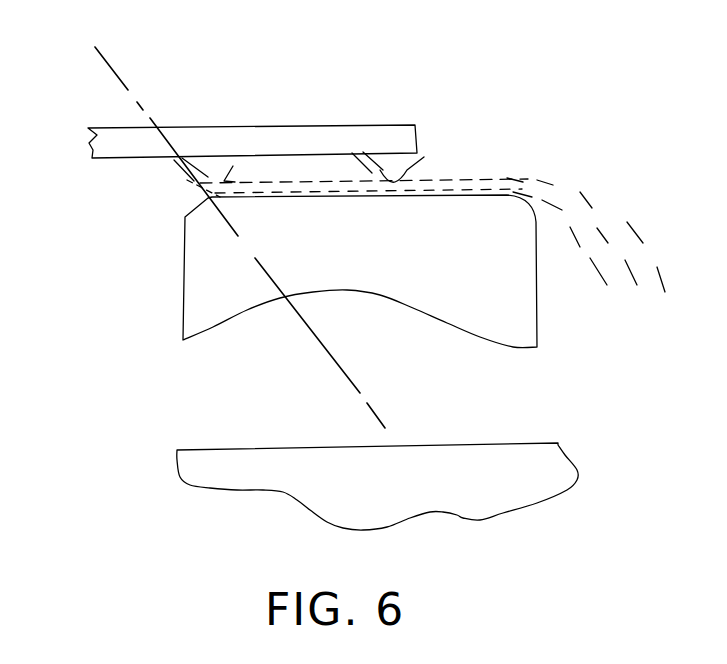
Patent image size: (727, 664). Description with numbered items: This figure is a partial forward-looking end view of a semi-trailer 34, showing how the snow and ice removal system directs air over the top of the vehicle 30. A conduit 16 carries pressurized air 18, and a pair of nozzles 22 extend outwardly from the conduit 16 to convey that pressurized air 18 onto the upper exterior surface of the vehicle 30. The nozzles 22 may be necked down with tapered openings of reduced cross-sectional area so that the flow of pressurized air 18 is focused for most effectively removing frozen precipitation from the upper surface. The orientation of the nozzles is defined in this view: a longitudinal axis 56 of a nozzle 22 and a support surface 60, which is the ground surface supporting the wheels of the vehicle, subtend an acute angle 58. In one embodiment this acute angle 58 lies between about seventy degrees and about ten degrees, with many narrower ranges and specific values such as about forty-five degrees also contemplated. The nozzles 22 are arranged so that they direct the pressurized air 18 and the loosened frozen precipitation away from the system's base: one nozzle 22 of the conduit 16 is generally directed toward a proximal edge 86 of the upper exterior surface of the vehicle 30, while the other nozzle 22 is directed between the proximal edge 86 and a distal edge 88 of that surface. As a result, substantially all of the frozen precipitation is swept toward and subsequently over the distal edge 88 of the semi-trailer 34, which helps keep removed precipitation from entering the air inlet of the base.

The conduit 16 is at (268, 126).
The pressurized air 18 is at (235, 145).
The nozzles 22 is at (177, 162).
The vehicle 30 is at (108, 355).
The semi-trailer 34 is at (180, 297).
The longitudinal axis of nozzle 56 is at (123, 68).
The acute angle 58 is at (312, 356).
The support surface 60 is at (488, 442).
The proximal edge 86 is at (186, 216).
The distal edge 88 is at (530, 199).